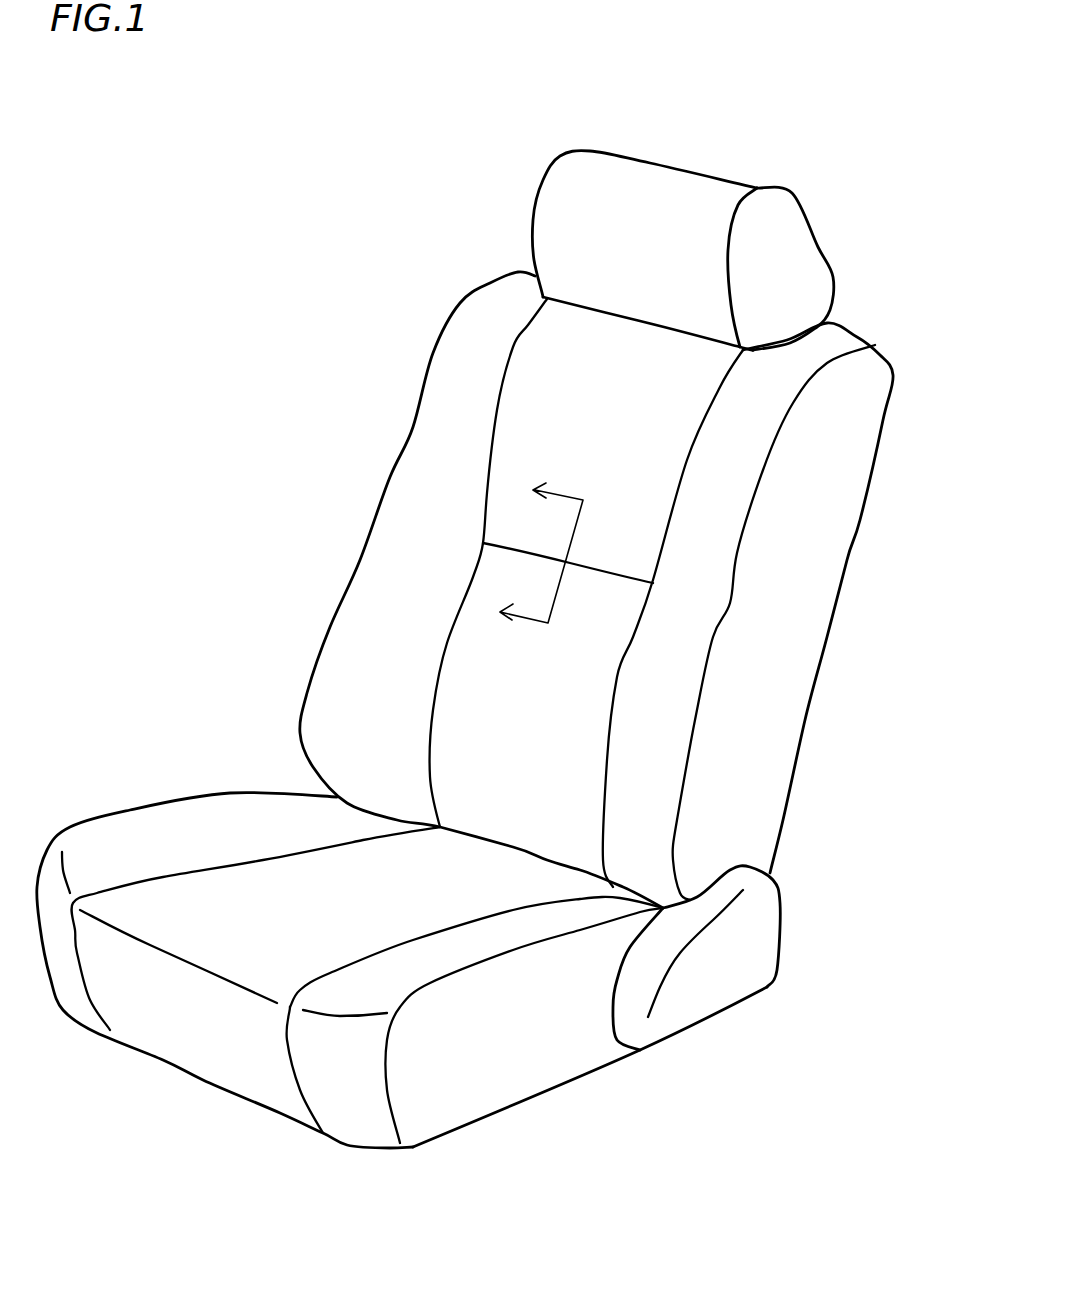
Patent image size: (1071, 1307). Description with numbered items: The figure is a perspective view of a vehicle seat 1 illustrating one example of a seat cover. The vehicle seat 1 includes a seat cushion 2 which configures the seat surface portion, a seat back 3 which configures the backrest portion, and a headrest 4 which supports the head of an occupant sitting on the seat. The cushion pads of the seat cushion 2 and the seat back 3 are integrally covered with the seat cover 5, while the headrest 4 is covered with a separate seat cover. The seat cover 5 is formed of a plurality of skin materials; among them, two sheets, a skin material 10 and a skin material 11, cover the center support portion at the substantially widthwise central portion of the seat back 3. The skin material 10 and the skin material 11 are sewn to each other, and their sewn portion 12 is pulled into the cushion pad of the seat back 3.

The vehicle seat 1 is at (494, 641).
The seat cushion 2 is at (598, 1075).
The seat back 3 is at (559, 590).
The headrest 4 is at (727, 173).
The seat cover 5 is at (521, 591).
The skin material 10 is at (580, 370).
The skin material 11 is at (480, 653).
The sewn portion 12 is at (517, 547).